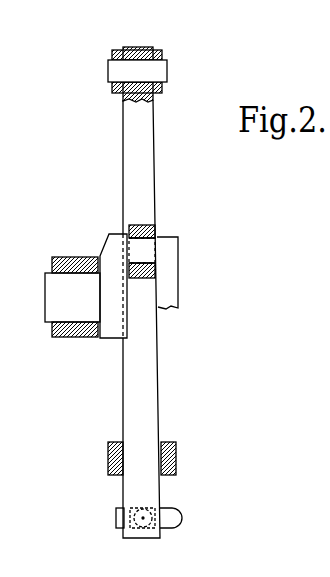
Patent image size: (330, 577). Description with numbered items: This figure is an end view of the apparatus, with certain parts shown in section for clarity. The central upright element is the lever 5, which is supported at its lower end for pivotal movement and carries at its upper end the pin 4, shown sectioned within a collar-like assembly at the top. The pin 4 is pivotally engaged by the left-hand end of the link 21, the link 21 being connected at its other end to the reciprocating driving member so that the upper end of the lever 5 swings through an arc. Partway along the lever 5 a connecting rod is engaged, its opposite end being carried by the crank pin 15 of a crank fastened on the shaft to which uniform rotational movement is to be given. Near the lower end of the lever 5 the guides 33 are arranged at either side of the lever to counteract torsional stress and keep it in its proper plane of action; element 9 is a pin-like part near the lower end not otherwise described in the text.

The pin 4 is at (137, 71).
The lever 5 is at (125, 182).
The pin 9 is at (120, 518).
The crank pin 15 is at (131, 249).
The link 21 is at (135, 48).
The guides 33 is at (162, 444).